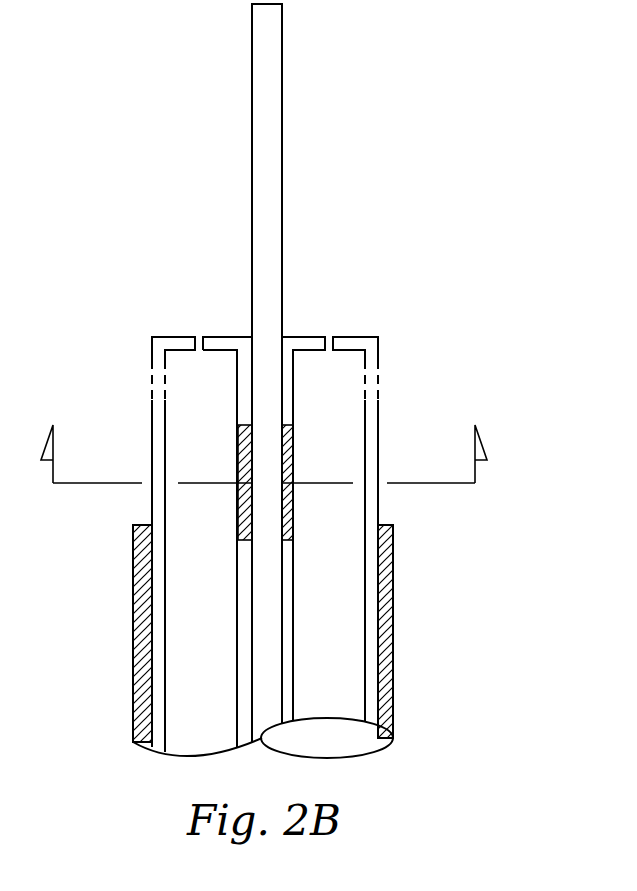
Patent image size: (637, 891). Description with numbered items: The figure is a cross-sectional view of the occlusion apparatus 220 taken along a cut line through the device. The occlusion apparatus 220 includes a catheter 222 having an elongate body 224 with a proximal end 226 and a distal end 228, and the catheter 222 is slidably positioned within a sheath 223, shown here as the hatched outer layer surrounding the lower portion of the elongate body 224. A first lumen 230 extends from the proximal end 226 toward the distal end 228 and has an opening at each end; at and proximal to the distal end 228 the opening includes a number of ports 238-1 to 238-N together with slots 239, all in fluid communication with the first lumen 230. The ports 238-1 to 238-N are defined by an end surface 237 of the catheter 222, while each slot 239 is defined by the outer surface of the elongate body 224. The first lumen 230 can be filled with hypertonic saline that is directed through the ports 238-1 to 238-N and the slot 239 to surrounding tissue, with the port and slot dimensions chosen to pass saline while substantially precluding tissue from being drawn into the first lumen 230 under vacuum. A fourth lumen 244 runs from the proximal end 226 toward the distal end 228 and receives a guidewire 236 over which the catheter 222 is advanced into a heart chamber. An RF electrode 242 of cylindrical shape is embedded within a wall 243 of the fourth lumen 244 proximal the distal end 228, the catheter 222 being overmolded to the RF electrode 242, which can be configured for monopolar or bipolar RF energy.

The occlusion apparatus 220 is at (92, 120).
The catheter 222 is at (388, 290).
The sheath 223 is at (394, 620).
The elongate body 224 is at (150, 450).
The proximal end 226 is at (450, 720).
The distal end 228 is at (440, 348).
The first lumen 230 is at (183, 398).
The guidewire 236 is at (283, 155).
The end surface 237 is at (165, 334).
The port 238-1 is at (200, 337).
The port 238-N is at (330, 337).
The slot 239 is at (150, 406).
The RF electrode 242 is at (294, 528).
The wall 243 is at (295, 448).
The fourth lumen 244 is at (283, 335).